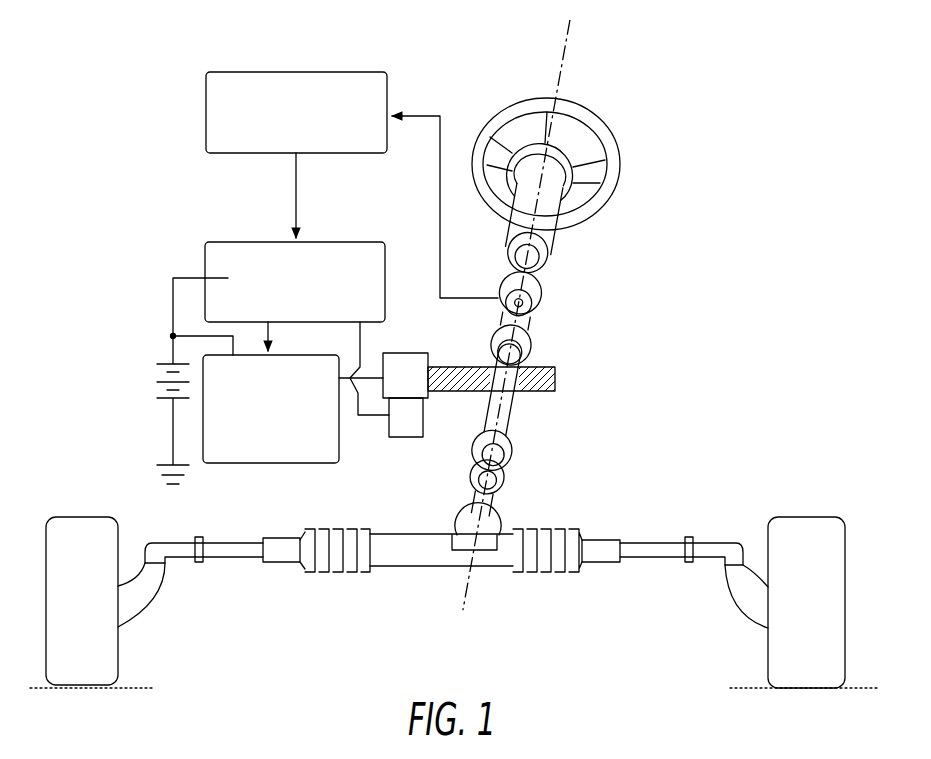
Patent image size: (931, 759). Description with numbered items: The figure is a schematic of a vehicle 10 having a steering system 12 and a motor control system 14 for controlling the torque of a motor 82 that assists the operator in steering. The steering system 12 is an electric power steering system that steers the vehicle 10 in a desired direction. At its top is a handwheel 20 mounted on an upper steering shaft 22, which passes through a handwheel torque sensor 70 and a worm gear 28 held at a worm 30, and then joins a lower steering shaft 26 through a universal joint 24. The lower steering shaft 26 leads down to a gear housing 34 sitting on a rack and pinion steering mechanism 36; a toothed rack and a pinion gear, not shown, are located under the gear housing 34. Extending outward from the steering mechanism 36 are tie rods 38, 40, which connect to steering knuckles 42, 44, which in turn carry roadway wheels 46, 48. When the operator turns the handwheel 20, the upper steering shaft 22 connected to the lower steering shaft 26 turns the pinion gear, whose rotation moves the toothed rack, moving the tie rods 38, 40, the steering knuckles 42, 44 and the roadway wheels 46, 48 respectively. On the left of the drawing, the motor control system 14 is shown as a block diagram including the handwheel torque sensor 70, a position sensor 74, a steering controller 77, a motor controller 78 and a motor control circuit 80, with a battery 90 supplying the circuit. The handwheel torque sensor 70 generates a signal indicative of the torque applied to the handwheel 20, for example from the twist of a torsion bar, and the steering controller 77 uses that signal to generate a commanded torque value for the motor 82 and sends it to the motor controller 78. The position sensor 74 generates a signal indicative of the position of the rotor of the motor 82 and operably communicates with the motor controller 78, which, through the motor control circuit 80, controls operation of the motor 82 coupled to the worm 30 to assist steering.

The vehicle 10 is at (742, 86).
The steering system 12 is at (650, 176).
The motor control system 14 is at (128, 182).
The handwheel 20 is at (598, 124).
The upper steering shaft 22 is at (552, 248).
The universal joint 24 is at (528, 455).
The lower steering shaft 26 is at (508, 490).
The worm gear 28 is at (535, 345).
The worm 30 is at (558, 380).
The gear housing 34 is at (446, 521).
The rack and pinion steering mechanism 36 is at (567, 528).
The tie rod 38 is at (230, 558).
The tie rod 40 is at (648, 557).
The steering knuckle 42 is at (150, 616).
The steering knuckle 44 is at (747, 608).
The roadway wheel 46 is at (90, 537).
The roadway wheel 48 is at (813, 537).
The handwheel torque sensor 70 is at (541, 293).
The position sensor 74 is at (400, 437).
The steering controller 77 is at (301, 72).
The motor controller 78 is at (334, 241).
The motor control circuit 80 is at (268, 463).
The motor 82 is at (408, 353).
The battery 90 is at (158, 395).